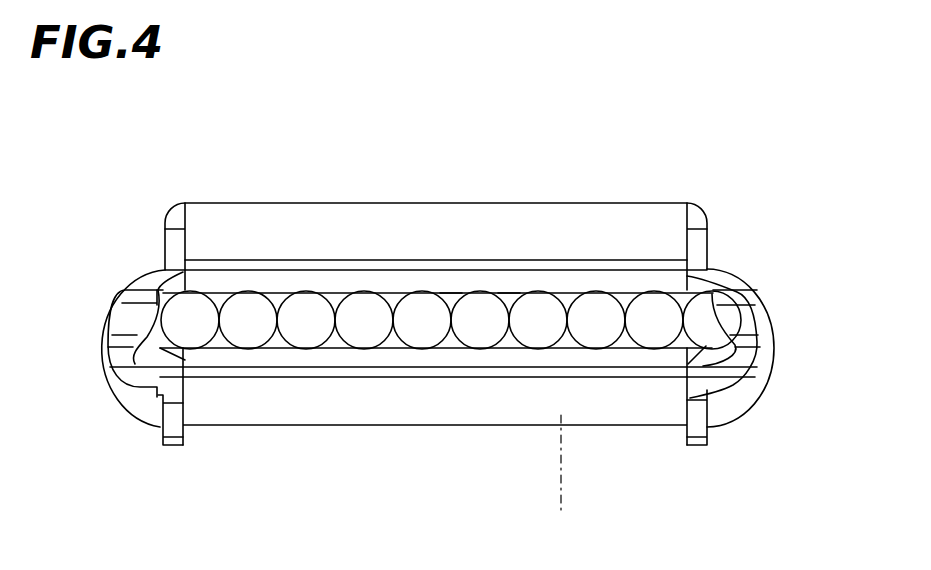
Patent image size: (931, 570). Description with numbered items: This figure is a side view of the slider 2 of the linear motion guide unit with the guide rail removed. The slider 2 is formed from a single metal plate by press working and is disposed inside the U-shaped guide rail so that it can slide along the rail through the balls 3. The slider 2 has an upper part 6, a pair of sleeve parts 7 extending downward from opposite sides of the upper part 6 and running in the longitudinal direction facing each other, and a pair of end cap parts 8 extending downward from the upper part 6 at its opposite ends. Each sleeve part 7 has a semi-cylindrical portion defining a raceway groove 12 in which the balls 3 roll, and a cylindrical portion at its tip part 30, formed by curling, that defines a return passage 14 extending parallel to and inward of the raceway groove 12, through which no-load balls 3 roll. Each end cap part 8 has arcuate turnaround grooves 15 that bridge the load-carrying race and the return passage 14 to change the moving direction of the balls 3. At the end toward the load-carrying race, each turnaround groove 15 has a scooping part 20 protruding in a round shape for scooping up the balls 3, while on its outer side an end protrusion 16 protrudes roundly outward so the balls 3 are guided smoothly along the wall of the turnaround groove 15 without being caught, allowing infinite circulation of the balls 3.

The slider 2 is at (587, 215).
The ball 3 is at (585, 332).
The upper part 6 is at (382, 223).
The sleeve part 7 is at (377, 282).
The end cap part 8 is at (710, 393).
The raceway groove 12 is at (507, 297).
The return passage 14 is at (562, 481).
The turnaround groove 15 is at (645, 452).
The end protrusion 16 is at (760, 320).
The scooping part 20 is at (718, 318).
The tip part 30 is at (308, 413).